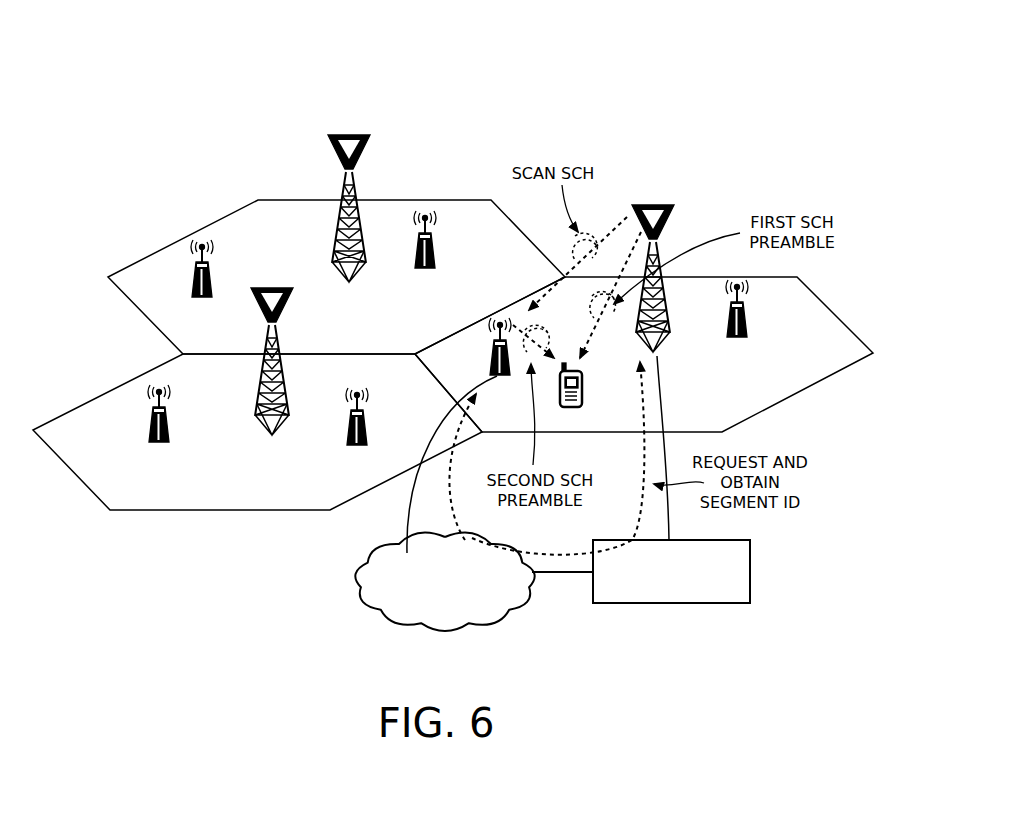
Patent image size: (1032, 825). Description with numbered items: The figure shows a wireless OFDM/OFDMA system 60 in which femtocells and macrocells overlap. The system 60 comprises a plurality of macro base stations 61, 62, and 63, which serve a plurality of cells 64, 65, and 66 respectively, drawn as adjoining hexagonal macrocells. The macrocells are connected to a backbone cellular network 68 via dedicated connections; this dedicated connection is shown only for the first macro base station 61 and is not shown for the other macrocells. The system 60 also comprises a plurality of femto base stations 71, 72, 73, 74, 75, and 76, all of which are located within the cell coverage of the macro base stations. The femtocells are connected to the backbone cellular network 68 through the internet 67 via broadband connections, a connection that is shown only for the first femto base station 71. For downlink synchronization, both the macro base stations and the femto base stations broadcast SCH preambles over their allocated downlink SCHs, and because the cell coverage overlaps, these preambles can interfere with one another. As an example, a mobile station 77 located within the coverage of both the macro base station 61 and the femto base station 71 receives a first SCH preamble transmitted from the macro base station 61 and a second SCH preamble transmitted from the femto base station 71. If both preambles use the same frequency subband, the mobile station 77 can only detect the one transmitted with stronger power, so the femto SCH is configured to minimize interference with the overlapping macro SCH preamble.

The wireless OFDM/OFDMA system 60 is at (752, 40).
The macro base station MBS61 61 is at (653, 203).
The macro base station MBS62 62 is at (349, 133).
The macro base station MBS63 63 is at (272, 286).
The cell 64 is at (838, 362).
The cell 65 is at (160, 290).
The cell 66 is at (95, 442).
The internet 67 is at (460, 628).
The backbone cellular network 68 is at (752, 567).
The femto base station FBS71 71 is at (502, 376).
The femto base station FBS72 72 is at (739, 338).
The femto base station FBS73 73 is at (427, 269).
The femto base station FBS74 74 is at (204, 298).
The femto base station FBS75 75 is at (359, 446).
The femto base station FBS76 76 is at (161, 443).
The mobile station MS77 77 is at (575, 396).